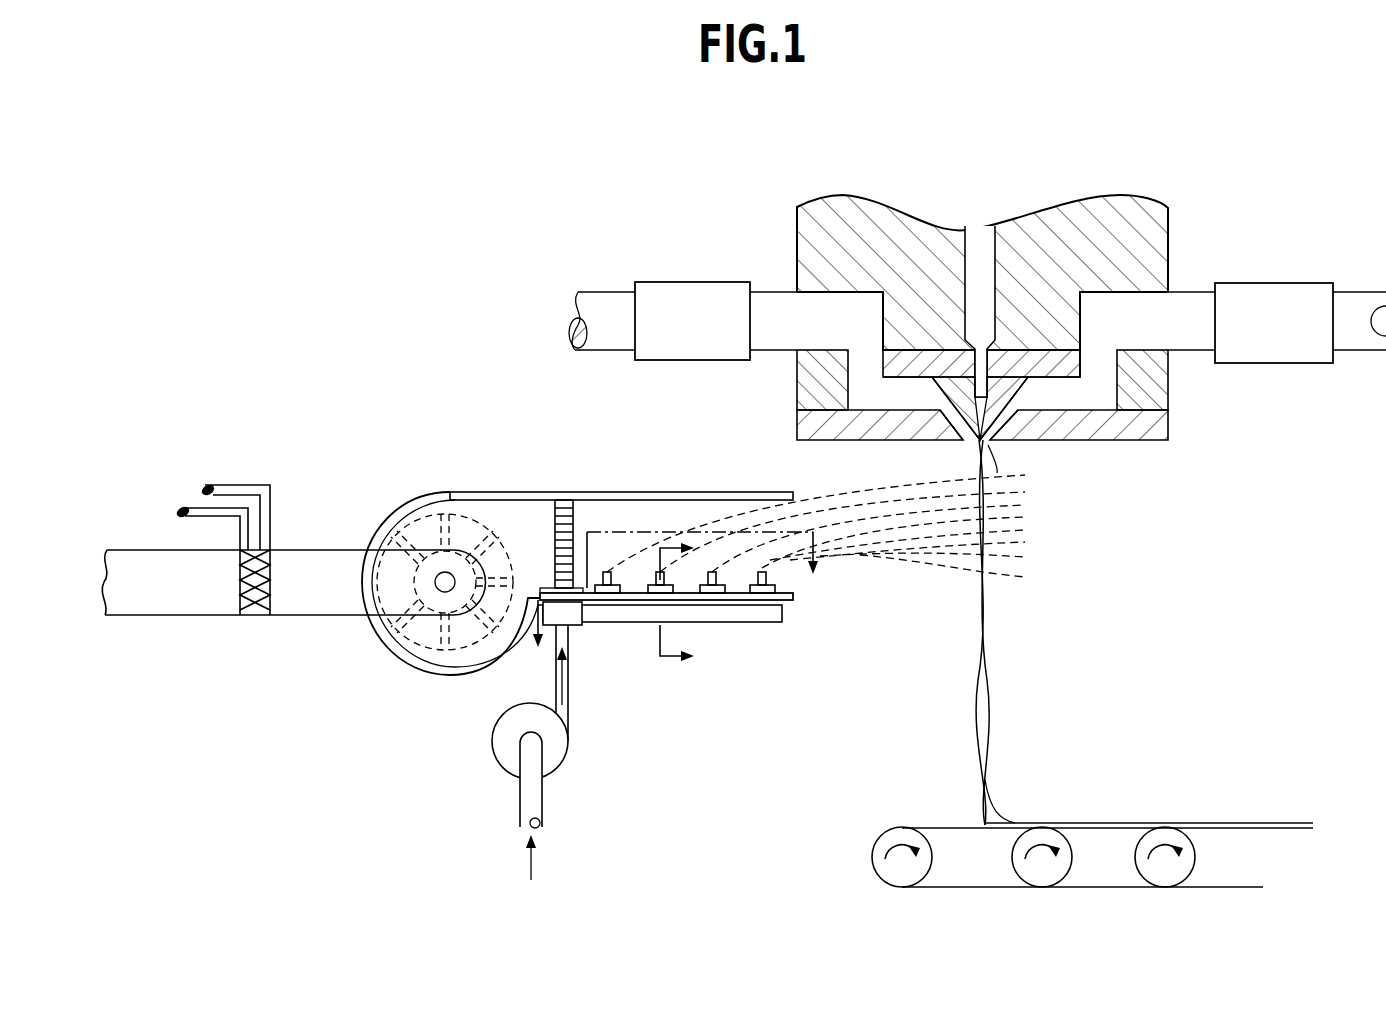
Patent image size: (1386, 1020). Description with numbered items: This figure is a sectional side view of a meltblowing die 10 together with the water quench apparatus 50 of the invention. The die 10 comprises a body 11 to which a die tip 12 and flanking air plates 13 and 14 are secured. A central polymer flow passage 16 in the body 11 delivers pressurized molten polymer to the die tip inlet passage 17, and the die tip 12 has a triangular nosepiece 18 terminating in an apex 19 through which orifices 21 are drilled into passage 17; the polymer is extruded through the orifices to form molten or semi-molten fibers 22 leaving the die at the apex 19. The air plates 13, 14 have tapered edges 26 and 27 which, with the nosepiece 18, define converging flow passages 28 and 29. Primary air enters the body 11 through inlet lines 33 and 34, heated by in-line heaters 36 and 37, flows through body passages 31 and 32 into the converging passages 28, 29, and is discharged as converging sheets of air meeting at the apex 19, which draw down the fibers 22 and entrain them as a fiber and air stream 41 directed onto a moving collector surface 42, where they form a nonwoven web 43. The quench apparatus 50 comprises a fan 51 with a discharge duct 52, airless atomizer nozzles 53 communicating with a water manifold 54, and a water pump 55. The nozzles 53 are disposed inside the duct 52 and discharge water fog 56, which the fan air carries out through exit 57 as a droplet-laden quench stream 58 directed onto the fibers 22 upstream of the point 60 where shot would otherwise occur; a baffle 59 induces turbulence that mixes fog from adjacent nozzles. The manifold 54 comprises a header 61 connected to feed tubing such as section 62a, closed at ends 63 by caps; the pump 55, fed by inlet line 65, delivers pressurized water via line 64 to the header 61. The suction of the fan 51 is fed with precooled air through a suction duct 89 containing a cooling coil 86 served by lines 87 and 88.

The meltblowing die 10 is at (743, 160).
The die body 11 is at (1168, 227).
The die tip 12 is at (1058, 374).
The air plate 13 is at (900, 433).
The air plate 14 is at (1127, 440).
The central polymer flow passage 16 is at (980, 262).
The die tip inlet passage 17 is at (977, 358).
The triangular nosepiece 18 is at (1018, 393).
The apex 19 is at (990, 475).
The orifices 21 is at (978, 400).
The fibers 22 is at (980, 474).
The tapered edge 26 is at (943, 445).
The tapered edge 27 is at (1017, 425).
The converging flow passage 28 is at (873, 430).
The converging flow passage 29 is at (995, 437).
The passage 31 is at (860, 385).
The passage 32 is at (1140, 392).
The inlet line 33 is at (775, 292).
The inlet line 34 is at (1192, 292).
The in-line heater 36 is at (695, 282).
The in-line heater 37 is at (1285, 283).
The fiber and air stream 41 is at (995, 575).
The moving collector surface 42 is at (957, 828).
The nonwoven fabric or web 43 is at (1130, 823).
The quench apparatus 50 is at (392, 372).
The fan 51 is at (370, 535).
The discharge duct 52 is at (655, 492).
The airless atomizer nozzles 53 is at (660, 607).
The water manifold 54 is at (673, 611).
The water pump 55 is at (568, 742).
The water fog 56 is at (745, 550).
The exit 57 is at (800, 548).
The quench stream 58 is at (912, 520).
The baffle 59 is at (556, 502).
The point where shot would otherwise occur 60 is at (990, 688).
The header 61 is at (570, 613).
The feed tubing section 62a is at (748, 622).
The closed end 63 is at (785, 612).
The line 64 is at (575, 672).
The inlet line 65 is at (518, 797).
The cooling coil 86 is at (250, 618).
The line 87 is at (215, 487).
The line 88 is at (198, 510).
The suction duct 89 is at (340, 617).